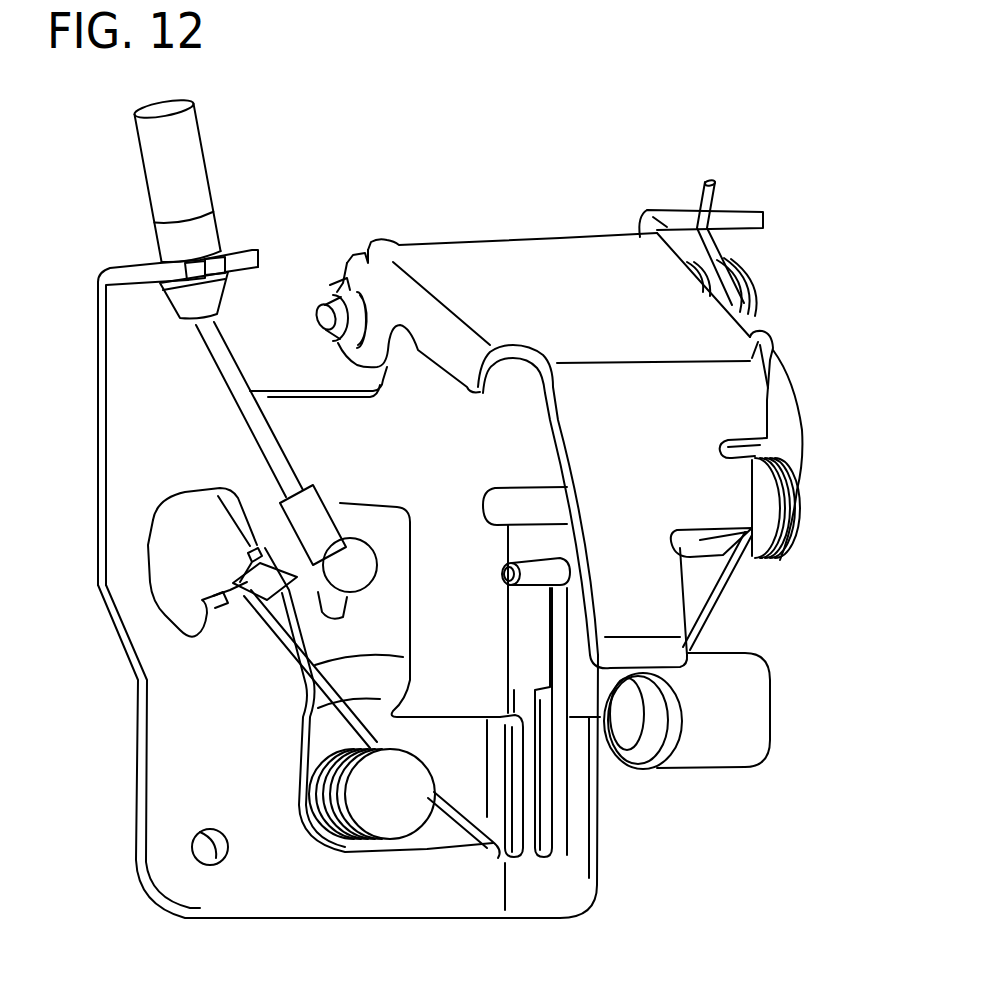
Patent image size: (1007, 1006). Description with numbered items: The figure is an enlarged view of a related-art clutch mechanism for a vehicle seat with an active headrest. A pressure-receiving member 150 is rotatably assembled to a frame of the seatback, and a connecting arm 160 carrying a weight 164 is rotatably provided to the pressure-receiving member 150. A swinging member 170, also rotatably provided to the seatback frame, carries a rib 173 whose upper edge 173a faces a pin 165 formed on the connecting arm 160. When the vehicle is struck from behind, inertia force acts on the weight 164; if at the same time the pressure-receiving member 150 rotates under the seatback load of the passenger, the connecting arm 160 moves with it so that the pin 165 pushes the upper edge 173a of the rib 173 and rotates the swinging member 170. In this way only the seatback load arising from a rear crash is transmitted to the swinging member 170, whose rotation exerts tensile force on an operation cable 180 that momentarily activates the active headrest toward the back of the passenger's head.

The pressure-receiving member 150 is at (505, 230).
The connecting arm 160 is at (748, 603).
The weight 164 is at (745, 705).
The pin 165 is at (544, 566).
The swinging member 170 is at (420, 712).
The rib 173 is at (502, 788).
The upper edge 173a is at (512, 705).
The operation cable 180 is at (240, 172).